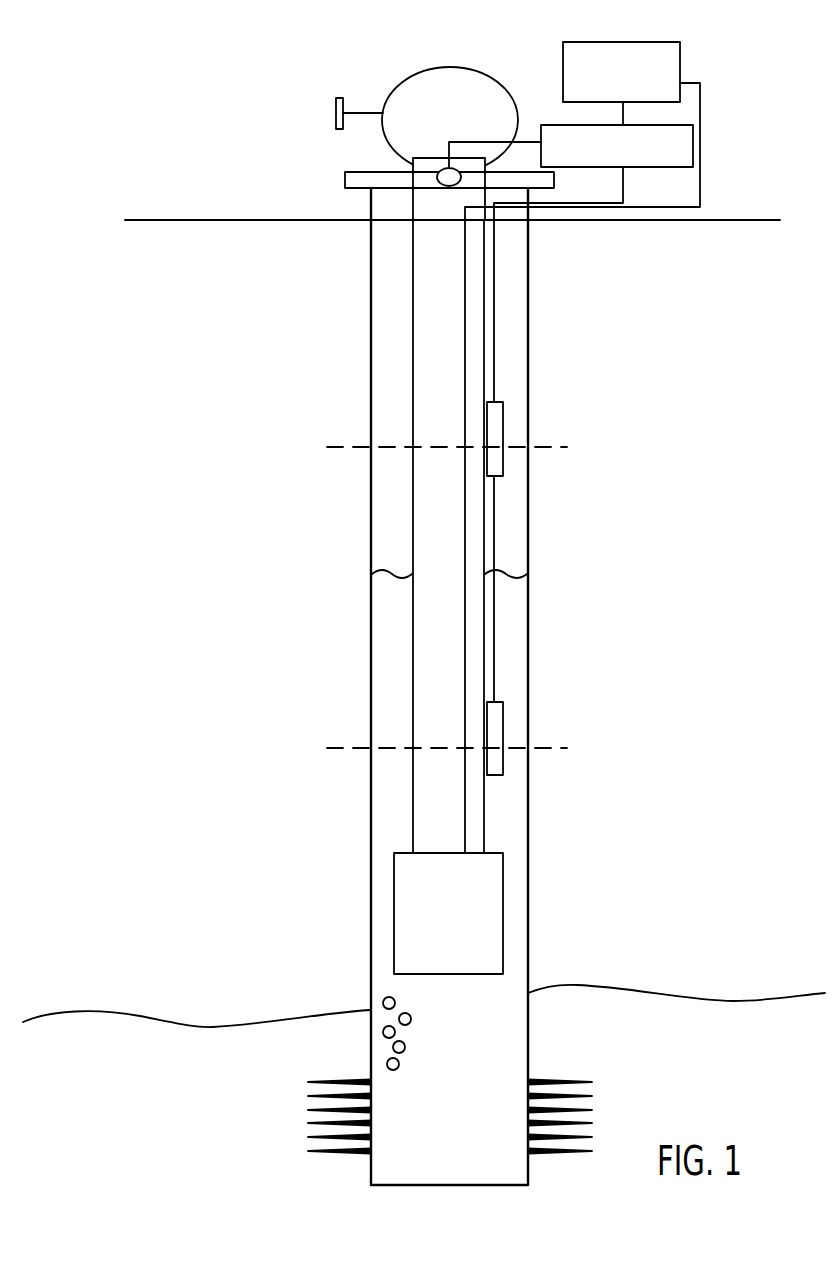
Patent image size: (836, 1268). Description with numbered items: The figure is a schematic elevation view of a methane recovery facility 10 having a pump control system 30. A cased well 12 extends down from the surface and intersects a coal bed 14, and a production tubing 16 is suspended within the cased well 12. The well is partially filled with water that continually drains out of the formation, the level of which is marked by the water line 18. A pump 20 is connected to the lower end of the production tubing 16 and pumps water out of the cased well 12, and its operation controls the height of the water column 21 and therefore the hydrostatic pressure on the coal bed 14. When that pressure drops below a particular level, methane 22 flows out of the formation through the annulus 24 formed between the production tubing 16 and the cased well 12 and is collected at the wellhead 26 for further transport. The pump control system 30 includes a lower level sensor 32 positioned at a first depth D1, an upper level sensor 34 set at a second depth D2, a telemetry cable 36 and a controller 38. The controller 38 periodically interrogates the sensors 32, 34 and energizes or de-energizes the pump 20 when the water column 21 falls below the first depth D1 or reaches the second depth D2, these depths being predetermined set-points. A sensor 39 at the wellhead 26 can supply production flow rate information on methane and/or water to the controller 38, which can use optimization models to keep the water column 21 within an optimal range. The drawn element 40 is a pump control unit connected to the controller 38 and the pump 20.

The methane recovery facility 10 is at (226, 126).
The cased well 12 is at (370, 683).
The coal bed 14 is at (208, 1025).
The production tubing 16 is at (412, 505).
The water line 18 is at (505, 572).
The pump 20 is at (437, 925).
The water column 21 is at (380, 808).
The methane 22 is at (387, 1013).
The annulus 24 is at (388, 552).
The wellhead 26 is at (345, 176).
The pump control system 30 is at (703, 496).
The lower level sensor 32 is at (505, 737).
The upper level sensor 34 is at (503, 421).
The telemetry cable 36 is at (494, 357).
The controller 38 is at (562, 124).
The sensor 39 is at (437, 176).
The pump control 40 is at (682, 65).
The first depth D1 is at (567, 748).
The second depth D2 is at (567, 447).